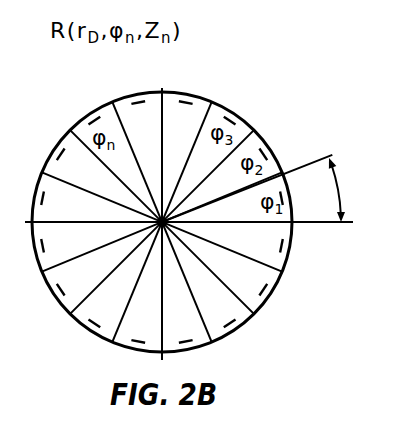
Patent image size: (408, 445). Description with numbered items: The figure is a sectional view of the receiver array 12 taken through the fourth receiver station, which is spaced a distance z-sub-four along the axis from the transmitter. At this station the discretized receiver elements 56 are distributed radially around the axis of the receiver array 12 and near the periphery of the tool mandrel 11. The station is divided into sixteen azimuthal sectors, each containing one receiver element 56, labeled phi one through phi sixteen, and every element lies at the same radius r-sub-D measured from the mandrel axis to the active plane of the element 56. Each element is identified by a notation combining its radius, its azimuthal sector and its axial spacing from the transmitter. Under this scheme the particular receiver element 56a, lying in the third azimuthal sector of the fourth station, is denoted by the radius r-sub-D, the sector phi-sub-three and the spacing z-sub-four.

The receiver array 12 is at (281, 110).
The receiver elements 56 is at (126, 94).
The receiver element 56a is at (191, 99).
The tool mandrel 11 is at (145, 96).